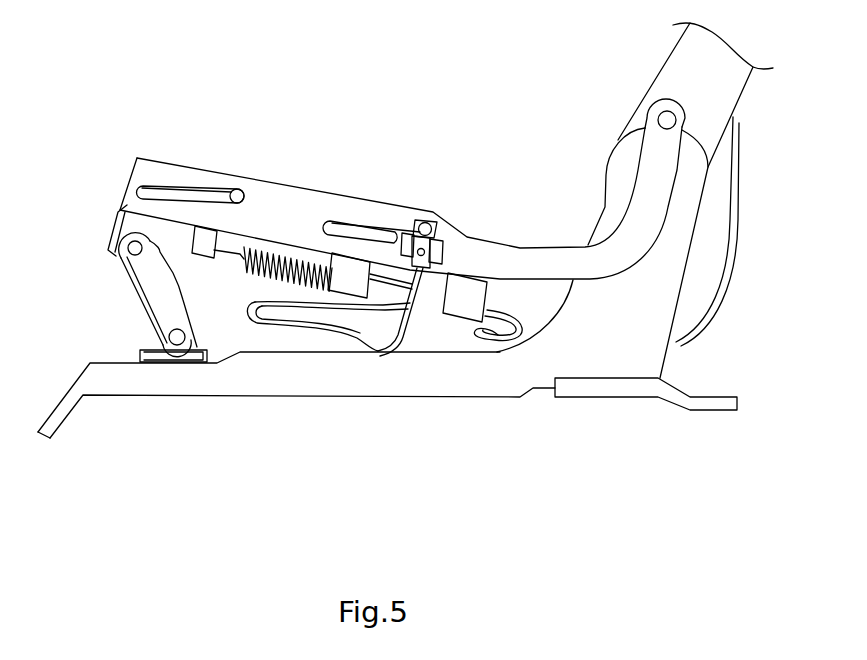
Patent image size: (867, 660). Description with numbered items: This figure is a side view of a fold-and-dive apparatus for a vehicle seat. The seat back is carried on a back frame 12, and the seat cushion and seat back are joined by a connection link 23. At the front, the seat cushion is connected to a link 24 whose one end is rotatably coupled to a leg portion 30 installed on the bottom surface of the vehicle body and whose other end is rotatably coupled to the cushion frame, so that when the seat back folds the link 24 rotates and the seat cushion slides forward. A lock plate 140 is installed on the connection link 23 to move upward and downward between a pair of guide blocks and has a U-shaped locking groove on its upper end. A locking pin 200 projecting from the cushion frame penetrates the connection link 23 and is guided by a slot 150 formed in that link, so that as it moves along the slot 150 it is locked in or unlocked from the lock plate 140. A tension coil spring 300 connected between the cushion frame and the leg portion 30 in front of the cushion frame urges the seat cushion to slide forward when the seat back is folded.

The back frame 12 is at (670, 77).
The connection link 23 is at (522, 260).
The link 24 is at (155, 290).
The leg portion 30 is at (357, 383).
The lock plate 140 is at (420, 256).
The slot 150 is at (377, 223).
The locking pin 200 is at (427, 218).
The spring 300 is at (248, 278).